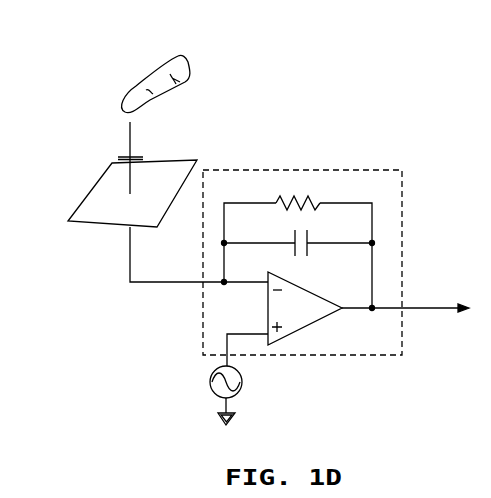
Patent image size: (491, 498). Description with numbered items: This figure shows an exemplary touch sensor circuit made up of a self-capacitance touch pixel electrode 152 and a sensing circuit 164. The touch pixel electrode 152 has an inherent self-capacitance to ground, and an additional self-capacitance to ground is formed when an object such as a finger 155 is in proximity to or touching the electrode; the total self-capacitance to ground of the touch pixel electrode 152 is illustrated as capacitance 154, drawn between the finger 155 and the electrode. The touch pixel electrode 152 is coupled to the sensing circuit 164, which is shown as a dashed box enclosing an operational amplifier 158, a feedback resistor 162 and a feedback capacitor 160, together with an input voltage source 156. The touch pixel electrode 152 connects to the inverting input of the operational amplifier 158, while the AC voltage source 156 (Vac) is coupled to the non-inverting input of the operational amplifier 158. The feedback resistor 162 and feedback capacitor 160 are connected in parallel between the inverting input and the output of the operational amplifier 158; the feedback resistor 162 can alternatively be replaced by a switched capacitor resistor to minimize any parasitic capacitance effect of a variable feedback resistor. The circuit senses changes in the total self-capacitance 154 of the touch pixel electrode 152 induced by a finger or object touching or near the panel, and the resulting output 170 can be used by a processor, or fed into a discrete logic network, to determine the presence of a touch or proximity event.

The touch pixel electrode 152 is at (72, 217).
The capacitance 154 is at (138, 156).
The finger 155 is at (148, 70).
The input voltage source 156 is at (243, 378).
The operational amplifier 158 is at (301, 330).
The feedback capacitor 160 is at (310, 240).
The feedback resistor 162 is at (303, 195).
The sensing circuit 164 is at (375, 170).
The output 170 is at (430, 306).